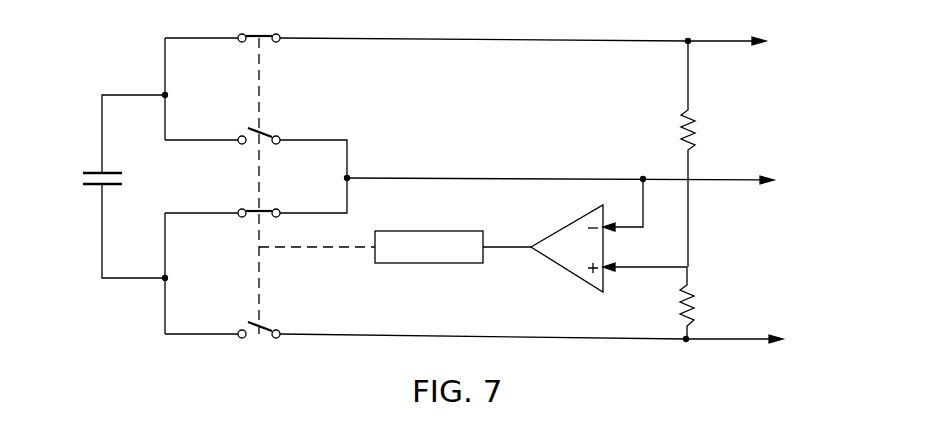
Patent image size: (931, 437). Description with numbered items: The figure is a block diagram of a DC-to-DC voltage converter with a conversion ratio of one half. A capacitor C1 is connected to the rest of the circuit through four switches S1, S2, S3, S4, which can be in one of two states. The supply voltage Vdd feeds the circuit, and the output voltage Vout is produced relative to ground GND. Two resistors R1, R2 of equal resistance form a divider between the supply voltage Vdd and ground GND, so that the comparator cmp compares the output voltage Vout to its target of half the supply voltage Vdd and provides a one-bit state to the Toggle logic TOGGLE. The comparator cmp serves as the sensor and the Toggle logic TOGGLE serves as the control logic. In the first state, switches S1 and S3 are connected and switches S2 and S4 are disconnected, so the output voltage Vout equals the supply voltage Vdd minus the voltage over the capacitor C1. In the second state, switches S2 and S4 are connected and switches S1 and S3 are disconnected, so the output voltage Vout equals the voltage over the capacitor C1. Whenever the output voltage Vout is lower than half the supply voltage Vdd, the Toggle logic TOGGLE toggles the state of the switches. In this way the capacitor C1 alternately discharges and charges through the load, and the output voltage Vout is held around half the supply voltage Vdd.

The capacitor C1 is at (112, 187).
The switch S1 is at (426, 25).
The switch S2 is at (256, 144).
The switch S3 is at (256, 197).
The switch S4 is at (425, 322).
The resistor R1 is at (702, 154).
The resistor R2 is at (703, 303).
The supply voltage Vdd is at (726, 27).
The output voltage Vout is at (560, 167).
The ground GND is at (740, 326).
The comparator cmp is at (609, 235).
The Toggle logic TOGGLE is at (453, 247).